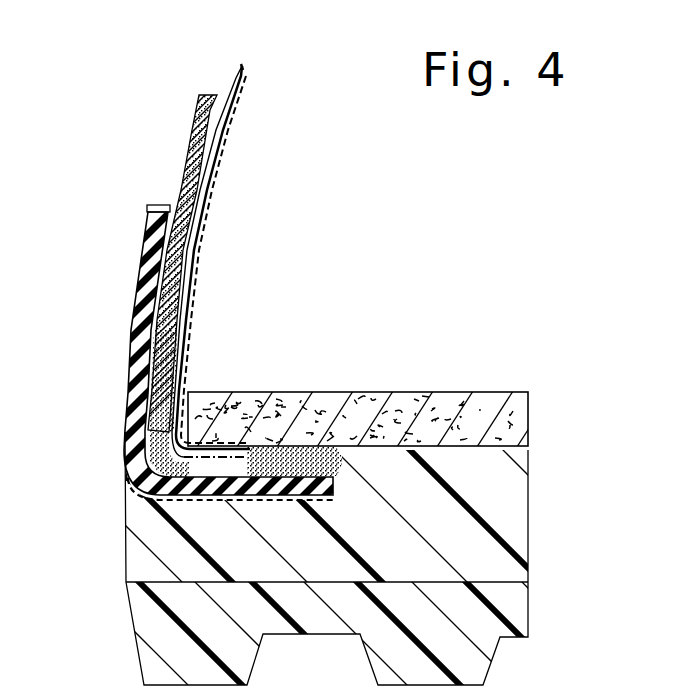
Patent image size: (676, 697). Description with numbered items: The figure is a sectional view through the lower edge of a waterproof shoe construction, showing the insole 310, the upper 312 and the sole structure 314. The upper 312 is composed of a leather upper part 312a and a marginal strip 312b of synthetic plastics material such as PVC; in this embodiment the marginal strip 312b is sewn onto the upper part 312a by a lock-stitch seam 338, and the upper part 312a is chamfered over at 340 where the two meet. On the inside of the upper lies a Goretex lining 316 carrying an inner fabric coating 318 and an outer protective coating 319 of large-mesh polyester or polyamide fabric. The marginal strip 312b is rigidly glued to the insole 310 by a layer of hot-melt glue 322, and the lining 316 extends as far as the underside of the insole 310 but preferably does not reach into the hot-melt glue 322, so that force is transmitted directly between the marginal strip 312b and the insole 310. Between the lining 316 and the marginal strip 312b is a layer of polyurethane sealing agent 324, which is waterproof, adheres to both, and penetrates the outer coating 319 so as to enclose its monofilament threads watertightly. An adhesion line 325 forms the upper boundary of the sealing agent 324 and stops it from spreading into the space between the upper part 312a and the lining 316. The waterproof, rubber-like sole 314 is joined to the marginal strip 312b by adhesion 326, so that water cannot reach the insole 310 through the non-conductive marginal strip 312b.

The insole 310 is at (462, 395).
The upper 312 is at (188, 280).
The upper part 312a is at (190, 133).
The marginal strip 312b is at (138, 302).
The sole structure 314 is at (126, 586).
The lining 316 is at (244, 65).
The inner fabric coating 318 is at (245, 88).
The outer protective coating 319 is at (240, 71).
The layer of hot-melt glue 322 is at (337, 477).
The layer of polyurethane sealing agent 324 is at (183, 363).
The adhesion line 325 is at (185, 262).
The adhesion 326 is at (126, 500).
The lock-stitch seam 338 is at (148, 210).
The chamfer 340 is at (167, 342).